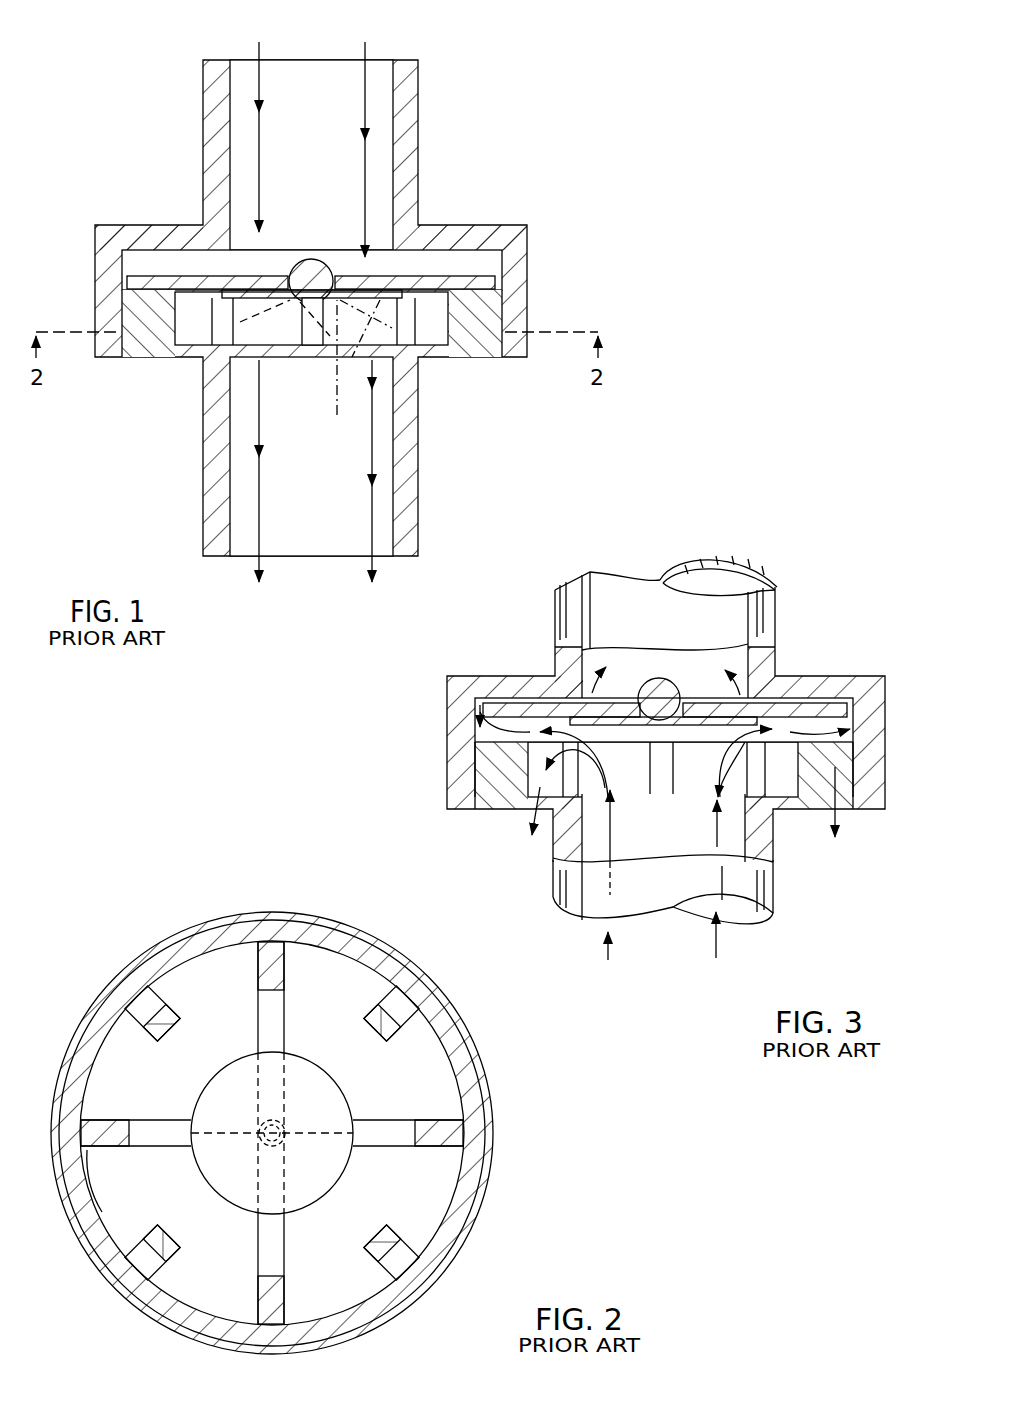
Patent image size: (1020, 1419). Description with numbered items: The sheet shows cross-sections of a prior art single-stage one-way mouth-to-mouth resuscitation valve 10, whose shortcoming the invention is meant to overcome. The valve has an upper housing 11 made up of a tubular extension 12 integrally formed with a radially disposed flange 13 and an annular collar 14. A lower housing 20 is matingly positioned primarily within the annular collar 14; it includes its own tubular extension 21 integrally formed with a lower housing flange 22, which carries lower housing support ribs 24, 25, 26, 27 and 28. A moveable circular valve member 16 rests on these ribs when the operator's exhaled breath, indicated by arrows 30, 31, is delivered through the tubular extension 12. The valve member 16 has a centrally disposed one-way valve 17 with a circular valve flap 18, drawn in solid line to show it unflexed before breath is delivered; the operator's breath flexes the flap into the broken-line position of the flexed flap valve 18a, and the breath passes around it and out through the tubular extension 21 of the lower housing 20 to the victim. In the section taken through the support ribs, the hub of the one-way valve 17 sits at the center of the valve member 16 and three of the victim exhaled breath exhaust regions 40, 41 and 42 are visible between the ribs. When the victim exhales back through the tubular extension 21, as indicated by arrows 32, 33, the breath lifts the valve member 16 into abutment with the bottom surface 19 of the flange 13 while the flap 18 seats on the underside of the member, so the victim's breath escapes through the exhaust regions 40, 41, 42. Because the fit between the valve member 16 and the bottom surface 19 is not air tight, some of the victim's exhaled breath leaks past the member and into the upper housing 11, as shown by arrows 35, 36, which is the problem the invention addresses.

In FIG. 1, the one-way mouth-to-mouth resuscitation valve 10 is at (450, 159).
In FIG. 1, the upper housing 11 is at (422, 113).
In FIG. 3, the upper housing 11 is at (780, 626).
In FIG. 1, the tubular extension 12 is at (203, 78).
In FIG. 3, the tubular extension 12 is at (555, 637).
In FIG. 1, the radially disposed flange 13 is at (130, 224).
In FIG. 3, the radially disposed flange 13 is at (468, 676).
In FIG. 1, the annular collar 14 is at (96, 248).
In FIG. 3, the annular collar 14 is at (447, 690).
In FIG. 2, the annular collar 14 is at (427, 982).
In FIG. 1, the moveable circular valve member 16 is at (222, 280).
In FIG. 3, the moveable circular valve member 16 is at (523, 703).
In FIG. 1, the one-way valve 17 is at (312, 262).
In FIG. 3, the one-way valve 17 is at (672, 680).
In FIG. 1, the circular valve flap 18 is at (405, 302).
In FIG. 3, the circular valve flap 18 is at (750, 708).
In FIG. 2, the circular valve flap 18 is at (322, 1107).
In FIG. 1, the flexed circular flap valve 18a is at (350, 369).
In FIG. 1, the bottom surface 19 is at (461, 252).
In FIG. 3, the bottom surface 19 is at (830, 697).
In FIG. 1, the lower housing 20 is at (422, 482).
In FIG. 3, the lower housing 20 is at (778, 862).
In FIG. 1, the tubular extension 21 is at (418, 527).
In FIG. 1, the lower housing flange 22 is at (156, 358).
In FIG. 1, the lower housing support rib 24 is at (465, 325).
In FIG. 3, the lower housing support rib 24 is at (845, 766).
In FIG. 2, the lower housing support rib 24 is at (480, 1079).
In FIG. 1, the lower housing support rib 25 is at (400, 305).
In FIG. 2, the lower housing support rib 25 is at (375, 1003).
In FIG. 1, the lower housing support rib 26 is at (305, 333).
In FIG. 2, the lower housing support rib 26 is at (248, 962).
In FIG. 1, the lower housing support rib 27 is at (212, 305).
In FIG. 2, the lower housing support rib 27 is at (160, 985).
In FIG. 1, the lower housing support rib 28 is at (143, 330).
In FIG. 3, the lower housing support rib 28 is at (483, 773).
In FIG. 2, the lower housing support rib 28 is at (87, 1150).
In FIG. 1, the arrow 30 is at (262, 48).
In FIG. 1, the arrow 31 is at (367, 48).
In FIG. 3, the arrow 32 is at (612, 945).
In FIG. 3, the arrow 33 is at (720, 950).
In FIG. 3, the arrow 35 is at (604, 685).
In FIG. 3, the arrow 36 is at (720, 668).
In FIG. 2, the victim exhaled breath exhaust region 40 is at (138, 1093).
In FIG. 2, the victim exhaled breath exhaust region 41 is at (226, 1014).
In FIG. 2, the victim exhaled breath exhaust region 42 is at (340, 1014).